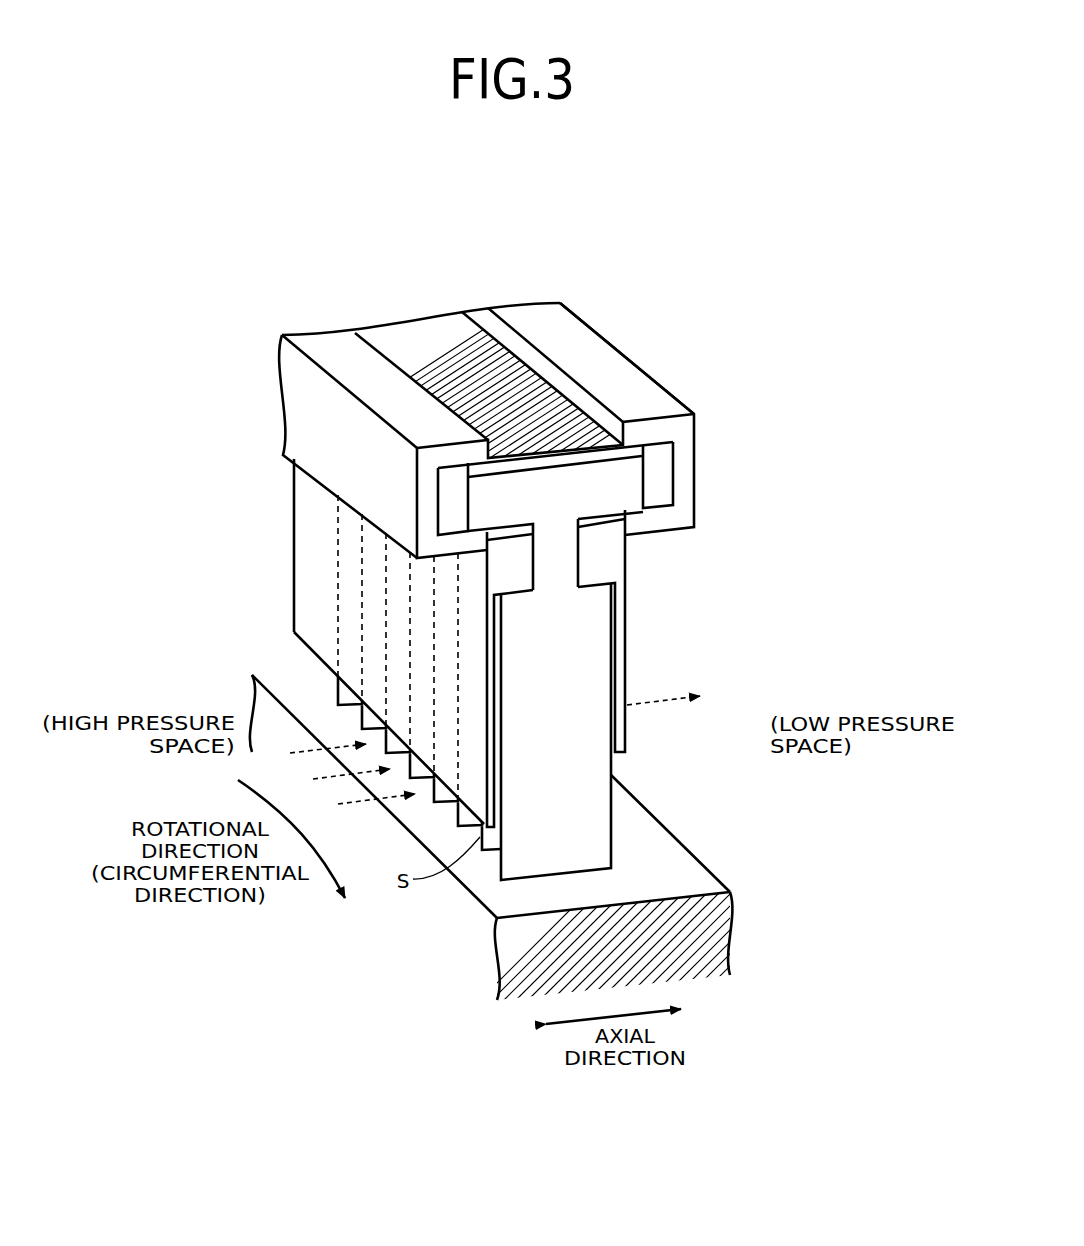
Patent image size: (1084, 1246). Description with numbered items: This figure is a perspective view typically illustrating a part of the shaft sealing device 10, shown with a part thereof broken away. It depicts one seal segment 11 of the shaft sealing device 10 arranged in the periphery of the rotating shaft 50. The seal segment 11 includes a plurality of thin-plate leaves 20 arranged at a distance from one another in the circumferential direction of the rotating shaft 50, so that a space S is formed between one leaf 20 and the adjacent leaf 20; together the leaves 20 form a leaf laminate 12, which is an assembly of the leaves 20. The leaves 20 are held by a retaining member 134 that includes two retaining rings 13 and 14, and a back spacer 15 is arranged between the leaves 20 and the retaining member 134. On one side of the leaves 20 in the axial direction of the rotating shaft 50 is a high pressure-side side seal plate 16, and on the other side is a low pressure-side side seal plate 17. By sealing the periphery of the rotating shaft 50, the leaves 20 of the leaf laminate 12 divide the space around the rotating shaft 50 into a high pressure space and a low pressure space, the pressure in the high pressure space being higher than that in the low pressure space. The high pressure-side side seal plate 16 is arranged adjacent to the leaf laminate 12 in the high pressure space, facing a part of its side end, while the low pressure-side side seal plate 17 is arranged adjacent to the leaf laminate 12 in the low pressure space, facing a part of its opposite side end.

The shaft sealing device 10 is at (766, 284).
The seal segment 11 is at (747, 465).
The leaf laminate 12 is at (622, 821).
The retaining ring 13 is at (335, 343).
The retaining ring 14 is at (573, 328).
The back spacer 15 is at (427, 338).
The high pressure-side side seal plate 16 is at (304, 559).
The low pressure-side side seal plate 17 is at (625, 562).
The leaf 20 is at (597, 764).
The rotating shaft 50 is at (677, 858).
The retaining member 134 is at (654, 367).